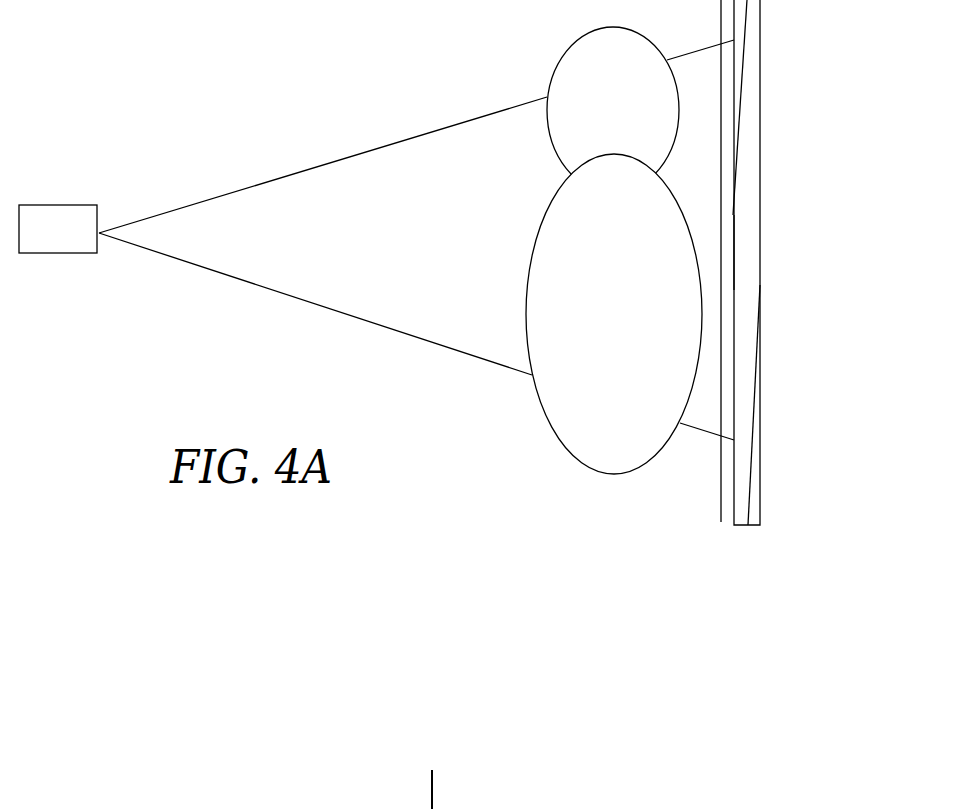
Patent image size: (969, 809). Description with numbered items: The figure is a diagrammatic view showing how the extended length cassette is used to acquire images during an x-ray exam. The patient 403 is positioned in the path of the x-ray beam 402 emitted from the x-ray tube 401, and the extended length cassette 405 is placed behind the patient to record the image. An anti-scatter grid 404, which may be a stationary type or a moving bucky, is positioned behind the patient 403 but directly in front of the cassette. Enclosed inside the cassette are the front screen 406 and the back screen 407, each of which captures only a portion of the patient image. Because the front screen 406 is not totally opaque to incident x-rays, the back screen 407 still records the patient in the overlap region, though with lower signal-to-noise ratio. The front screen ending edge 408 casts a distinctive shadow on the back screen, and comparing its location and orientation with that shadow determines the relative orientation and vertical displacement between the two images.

The x-ray tube 401 is at (72, 205).
The x-ray beam 402 is at (397, 242).
The patient 403 is at (557, 387).
The anti-scatter grid 404 is at (718, 493).
The extended length cassette 405 is at (758, 482).
The front screen 406 is at (745, 75).
The back screen 407 is at (753, 347).
The front screen ending edge 408 is at (735, 252).